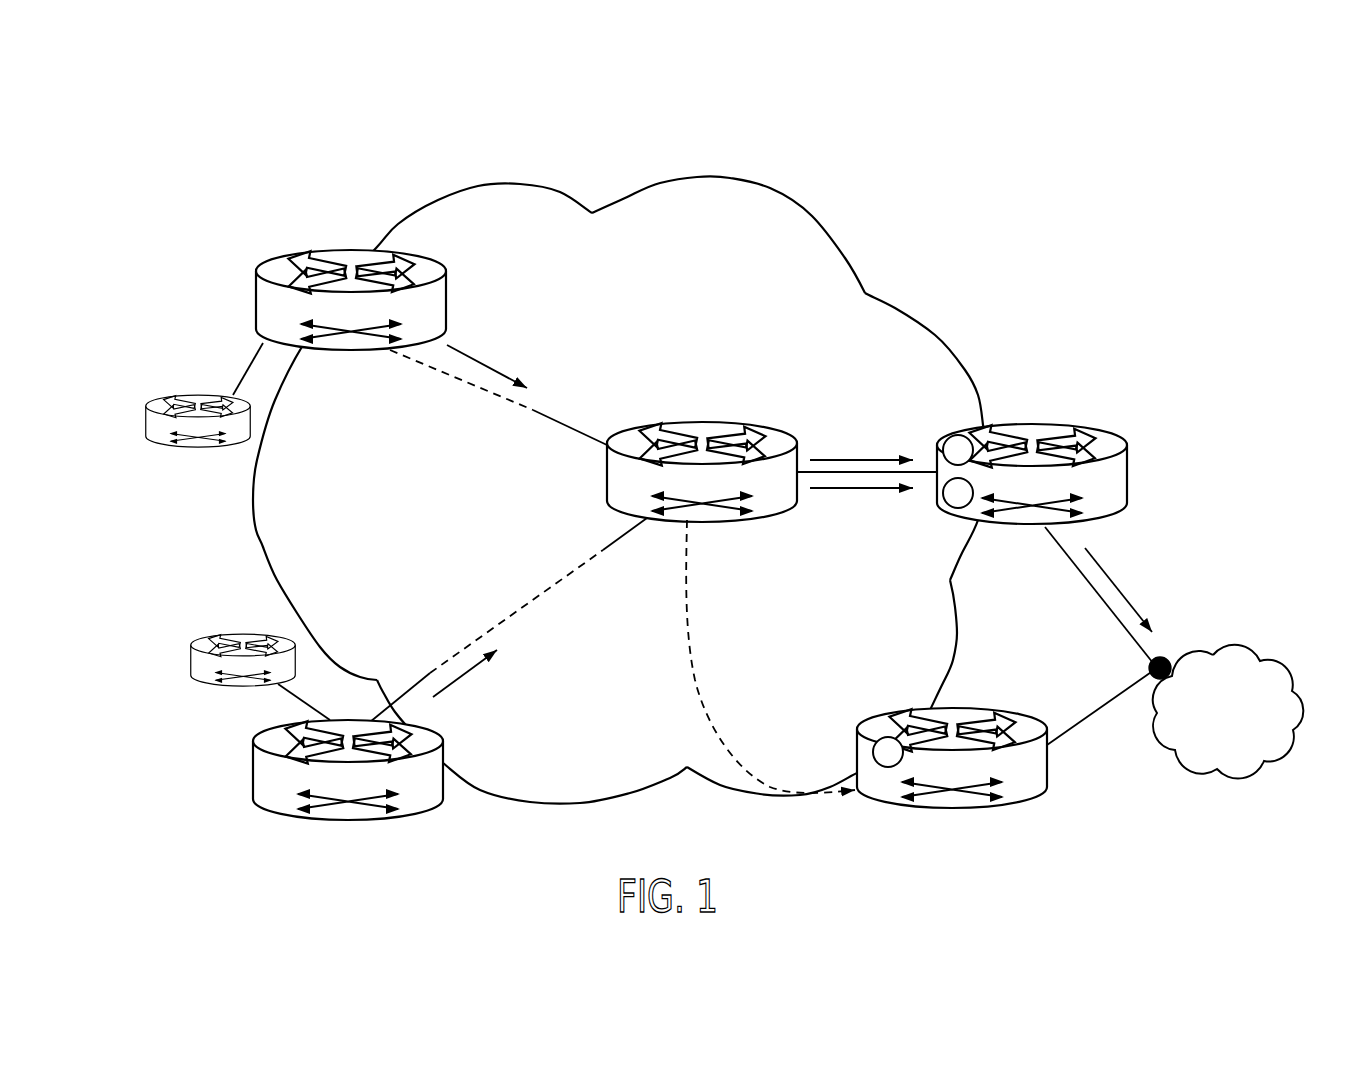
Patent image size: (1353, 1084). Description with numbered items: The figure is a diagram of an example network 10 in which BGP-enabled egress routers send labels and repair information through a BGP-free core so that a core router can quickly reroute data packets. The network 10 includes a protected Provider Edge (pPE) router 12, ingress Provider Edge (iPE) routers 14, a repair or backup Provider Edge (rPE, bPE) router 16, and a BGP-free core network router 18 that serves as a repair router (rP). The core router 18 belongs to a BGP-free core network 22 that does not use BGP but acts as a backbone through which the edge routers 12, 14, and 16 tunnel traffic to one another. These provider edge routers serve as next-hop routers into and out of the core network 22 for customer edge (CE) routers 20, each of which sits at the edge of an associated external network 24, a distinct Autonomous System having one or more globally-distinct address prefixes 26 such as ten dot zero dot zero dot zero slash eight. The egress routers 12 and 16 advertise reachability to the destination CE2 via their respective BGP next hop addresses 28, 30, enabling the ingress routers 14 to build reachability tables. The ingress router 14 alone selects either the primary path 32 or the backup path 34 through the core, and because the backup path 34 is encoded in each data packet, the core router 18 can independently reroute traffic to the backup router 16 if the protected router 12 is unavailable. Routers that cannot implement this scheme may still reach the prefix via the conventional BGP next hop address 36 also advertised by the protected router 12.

The network 10 is at (485, 158).
The protected Provider Edge (pPE) router 12 is at (1112, 512).
The ingress Provider Edge (iPE) router 14 is at (282, 260).
The repair Provider Edge (rPE) router 16 is at (1043, 725).
The BGP-free core network router 18 is at (752, 520).
The customer edge (CE) router 20 is at (195, 446).
The BGP-free core network 22 is at (413, 520).
The external network 24 is at (1275, 653).
The address prefix 26 is at (1265, 800).
The BGP next hop address (pNH) 28 is at (945, 435).
The BGP next hop address (bNH) 30 is at (880, 767).
The primary path 32 is at (826, 460).
The backup path 34 is at (697, 667).
The conventional BGP next hop address 36 is at (955, 510).